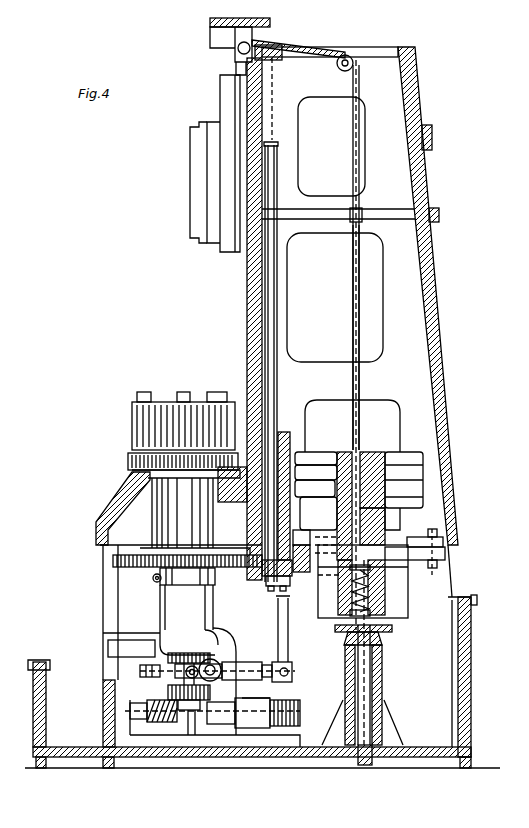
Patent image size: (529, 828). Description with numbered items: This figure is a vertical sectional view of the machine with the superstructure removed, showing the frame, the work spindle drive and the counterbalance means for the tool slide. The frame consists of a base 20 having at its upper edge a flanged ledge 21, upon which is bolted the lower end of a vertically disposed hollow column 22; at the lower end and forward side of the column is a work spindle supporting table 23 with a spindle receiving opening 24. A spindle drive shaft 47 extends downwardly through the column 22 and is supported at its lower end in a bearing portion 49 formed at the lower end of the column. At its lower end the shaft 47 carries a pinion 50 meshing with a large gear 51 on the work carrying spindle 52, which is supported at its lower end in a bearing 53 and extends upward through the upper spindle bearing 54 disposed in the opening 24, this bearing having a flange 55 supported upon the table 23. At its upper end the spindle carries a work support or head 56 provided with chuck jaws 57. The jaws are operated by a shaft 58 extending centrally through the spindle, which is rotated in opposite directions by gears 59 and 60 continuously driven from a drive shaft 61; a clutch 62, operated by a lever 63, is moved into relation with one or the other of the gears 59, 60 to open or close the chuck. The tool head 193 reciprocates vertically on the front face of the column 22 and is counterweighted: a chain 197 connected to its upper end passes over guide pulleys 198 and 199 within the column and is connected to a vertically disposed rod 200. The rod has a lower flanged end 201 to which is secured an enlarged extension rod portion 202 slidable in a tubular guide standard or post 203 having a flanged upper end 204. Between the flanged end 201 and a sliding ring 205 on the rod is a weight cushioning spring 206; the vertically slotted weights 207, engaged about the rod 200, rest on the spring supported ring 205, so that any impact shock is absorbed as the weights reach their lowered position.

The base 20 is at (262, 656).
The flanged ledge 21 is at (453, 550).
The hollow column 22 is at (255, 308).
The work spindle supporting table 23 is at (118, 503).
The spindle receiving opening 24 is at (132, 474).
The spindle drive shaft 47 is at (265, 268).
The bearing portion 49 is at (284, 432).
The pinion 50 is at (263, 582).
The large gear 51 is at (114, 563).
The work carrying spindle 52 is at (177, 588).
The bearing 53 is at (172, 616).
The upper spindle bearing 54 is at (175, 520).
The flange 55 is at (130, 456).
The work support or head 56 is at (130, 405).
The chuck jaws 57 is at (183, 392).
The shaft 58 is at (186, 669).
The gear 59 is at (131, 645).
The gear 60 is at (170, 690).
The drive shaft 61 is at (247, 722).
The clutch 62 is at (208, 655).
The lever 63 is at (242, 670).
The vertical slide or tool head 193 is at (218, 168).
The chain 197 is at (321, 48).
The guide pulley 198 is at (258, 42).
The guide pulley 199 is at (352, 66).
The vertically disposed rod 200 is at (356, 316).
The flanged end 201 is at (380, 635).
The enlarged extension rod portion 202 is at (370, 670).
The tubular guide standard or post 203 is at (349, 676).
The flanged upper end 204 is at (342, 630).
The sliding ring 205 is at (392, 570).
The weight cushioning spring 206 is at (386, 600).
The weights 207 is at (398, 520).